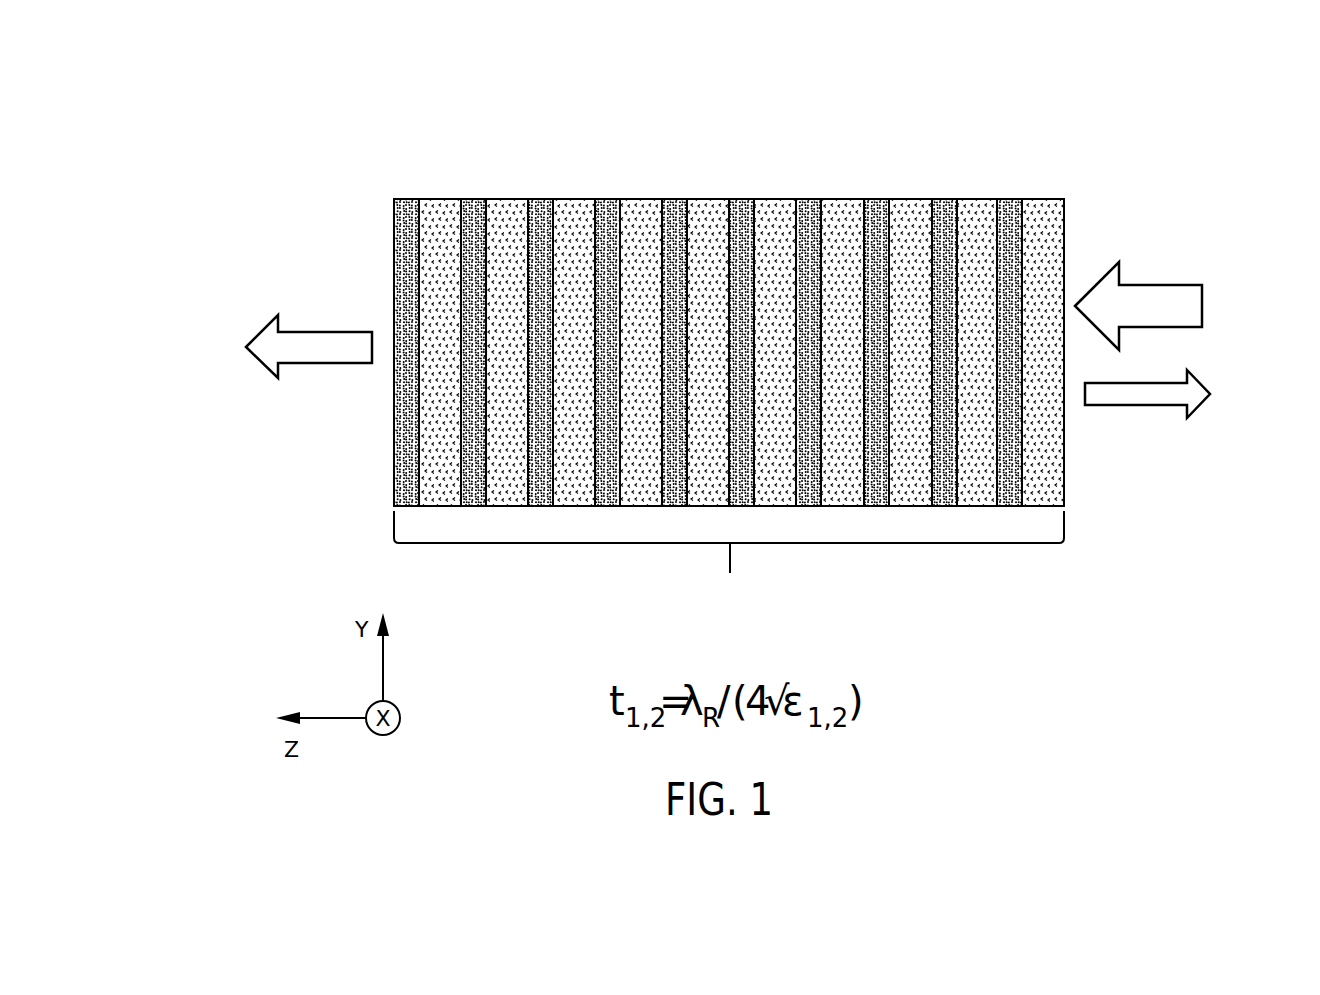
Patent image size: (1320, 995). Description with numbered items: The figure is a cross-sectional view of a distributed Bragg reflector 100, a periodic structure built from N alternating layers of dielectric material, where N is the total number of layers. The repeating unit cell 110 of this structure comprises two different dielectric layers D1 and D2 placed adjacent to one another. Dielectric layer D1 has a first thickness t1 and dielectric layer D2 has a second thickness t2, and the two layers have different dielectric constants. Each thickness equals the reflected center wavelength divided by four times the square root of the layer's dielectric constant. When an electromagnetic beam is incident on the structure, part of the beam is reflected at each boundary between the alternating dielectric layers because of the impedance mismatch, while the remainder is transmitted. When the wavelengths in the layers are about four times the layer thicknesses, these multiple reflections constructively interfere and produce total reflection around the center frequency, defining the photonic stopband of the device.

The distributed Bragg reflector 100 is at (698, 305).
The unit cell 110 is at (395, 190).
The dielectric layer D1 is at (904, 205).
The dielectric layer D2 is at (945, 205).
The first thickness t1 is at (823, 195).
The second thickness t2 is at (796, 195).